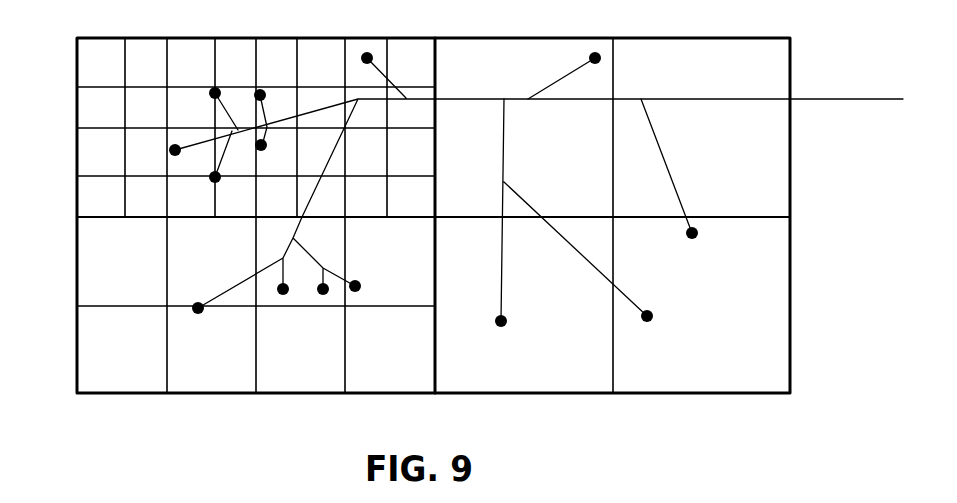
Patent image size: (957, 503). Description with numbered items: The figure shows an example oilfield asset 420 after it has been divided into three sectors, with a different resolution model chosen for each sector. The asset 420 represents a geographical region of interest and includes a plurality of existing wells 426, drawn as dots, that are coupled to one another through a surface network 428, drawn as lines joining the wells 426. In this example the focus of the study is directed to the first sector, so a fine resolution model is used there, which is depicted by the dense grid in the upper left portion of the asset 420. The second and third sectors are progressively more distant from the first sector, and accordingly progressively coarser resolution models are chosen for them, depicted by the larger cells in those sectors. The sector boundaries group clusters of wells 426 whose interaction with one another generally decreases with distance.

The asset 420 is at (72, 80).
The existing wells 426 is at (200, 304).
The surface network 428 is at (504, 200).